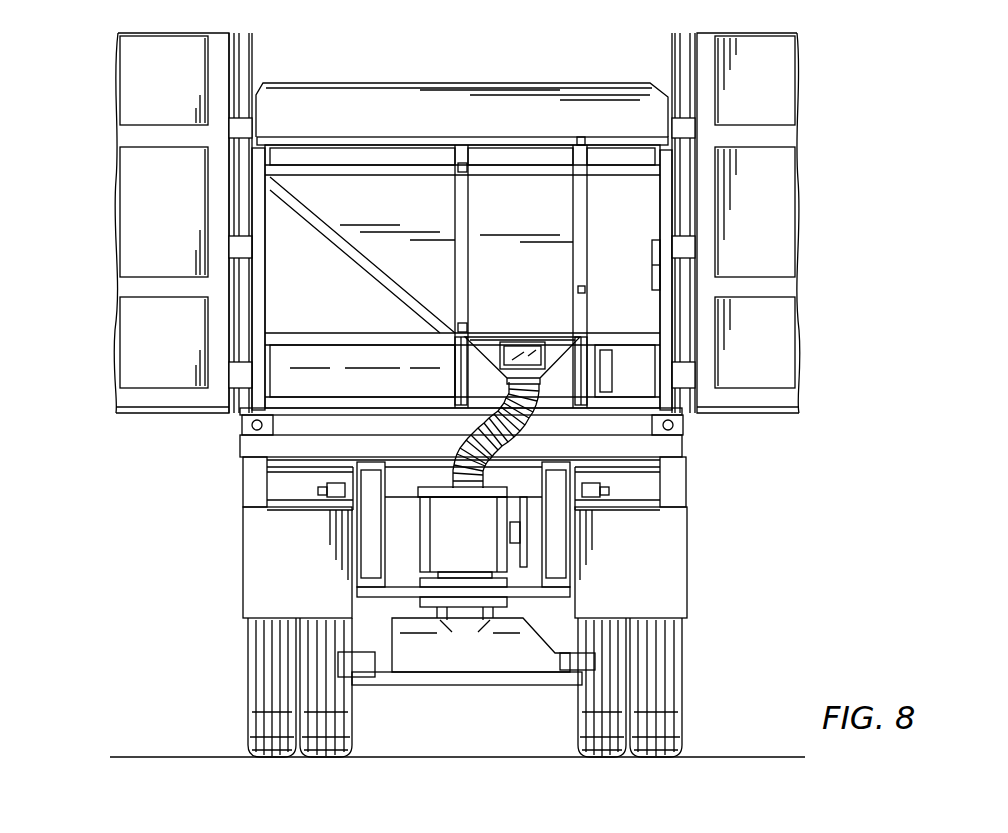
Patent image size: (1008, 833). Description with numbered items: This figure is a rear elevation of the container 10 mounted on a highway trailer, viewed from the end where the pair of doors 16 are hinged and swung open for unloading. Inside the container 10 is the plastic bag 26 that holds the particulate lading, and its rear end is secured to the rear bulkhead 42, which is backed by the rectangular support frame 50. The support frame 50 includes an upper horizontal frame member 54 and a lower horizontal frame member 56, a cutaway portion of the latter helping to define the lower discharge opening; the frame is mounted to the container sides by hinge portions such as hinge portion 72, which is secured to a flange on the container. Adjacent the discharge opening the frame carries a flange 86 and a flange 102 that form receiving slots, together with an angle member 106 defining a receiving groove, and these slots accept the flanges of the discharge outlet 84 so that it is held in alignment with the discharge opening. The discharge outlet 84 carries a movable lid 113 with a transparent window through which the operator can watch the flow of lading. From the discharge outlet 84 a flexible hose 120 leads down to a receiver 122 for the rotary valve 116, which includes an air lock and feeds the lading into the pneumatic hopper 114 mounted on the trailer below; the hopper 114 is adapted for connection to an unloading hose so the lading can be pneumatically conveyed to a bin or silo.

The container 10 is at (98, 39).
The doors 16 is at (133, 80).
The plastic bag 26 is at (391, 59).
The rear bulkhead 42 is at (482, 100).
The upper horizontal frame member 54 is at (398, 137).
The support frame 50 is at (540, 143).
The hinge portion 72 is at (652, 262).
The lower horizontal frame member 56 is at (303, 393).
The flange 86 is at (445, 355).
The discharge outlet 84 is at (488, 330).
The movable lid 113 is at (527, 345).
The flange 102 is at (583, 367).
The angle member 106 is at (603, 378).
The flexible hose 120 is at (520, 416).
The receiver 122 is at (470, 475).
The rotary valve 116 is at (485, 550).
The pneumatic hopper 114 is at (452, 666).